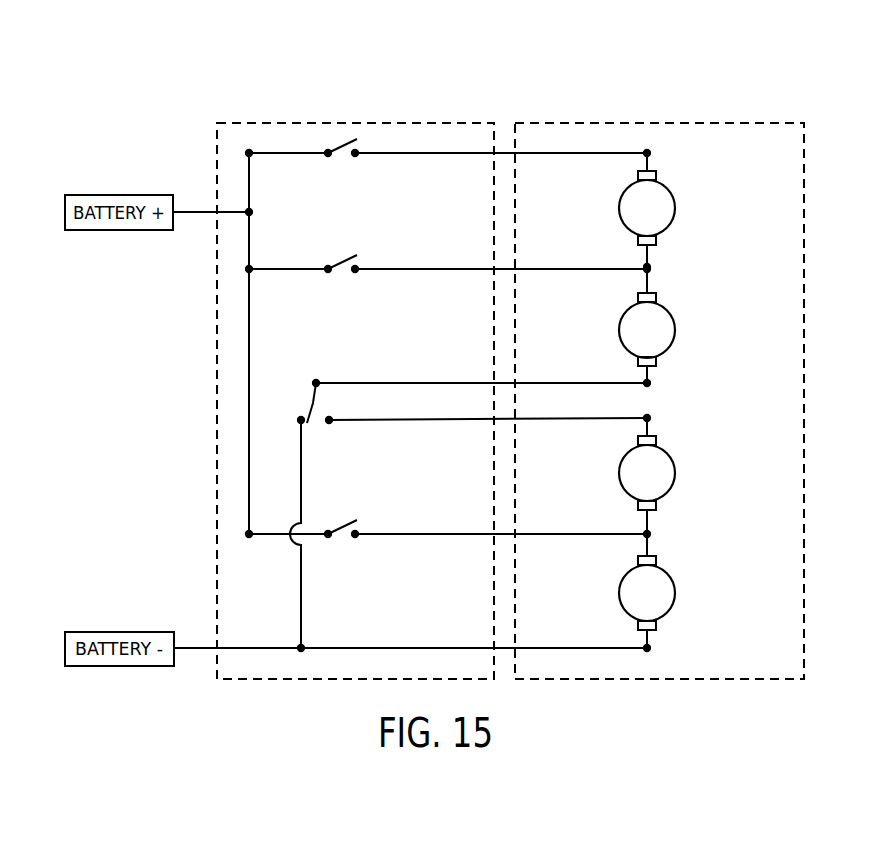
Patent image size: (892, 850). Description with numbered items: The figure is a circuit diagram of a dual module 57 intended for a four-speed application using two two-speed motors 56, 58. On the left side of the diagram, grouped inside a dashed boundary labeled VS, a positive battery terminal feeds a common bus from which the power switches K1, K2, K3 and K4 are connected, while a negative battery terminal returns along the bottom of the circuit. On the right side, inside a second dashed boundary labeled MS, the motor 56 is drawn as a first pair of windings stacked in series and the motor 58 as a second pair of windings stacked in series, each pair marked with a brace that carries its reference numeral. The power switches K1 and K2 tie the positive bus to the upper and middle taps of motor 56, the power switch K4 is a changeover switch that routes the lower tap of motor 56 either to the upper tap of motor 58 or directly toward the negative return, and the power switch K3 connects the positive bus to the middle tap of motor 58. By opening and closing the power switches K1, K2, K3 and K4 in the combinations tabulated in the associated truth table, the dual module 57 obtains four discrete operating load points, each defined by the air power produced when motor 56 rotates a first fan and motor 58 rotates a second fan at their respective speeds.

The two-speed motor 56 is at (688, 167).
The dual module 57 is at (653, 91).
The two-speed motor 58 is at (688, 435).
The power switch K1 is at (347, 143).
The power switch K2 is at (347, 261).
The power switch K3 is at (343, 527).
The power switch K4 is at (310, 403).
The voltage switching section VS is at (275, 120).
The motor section MS is at (597, 120).